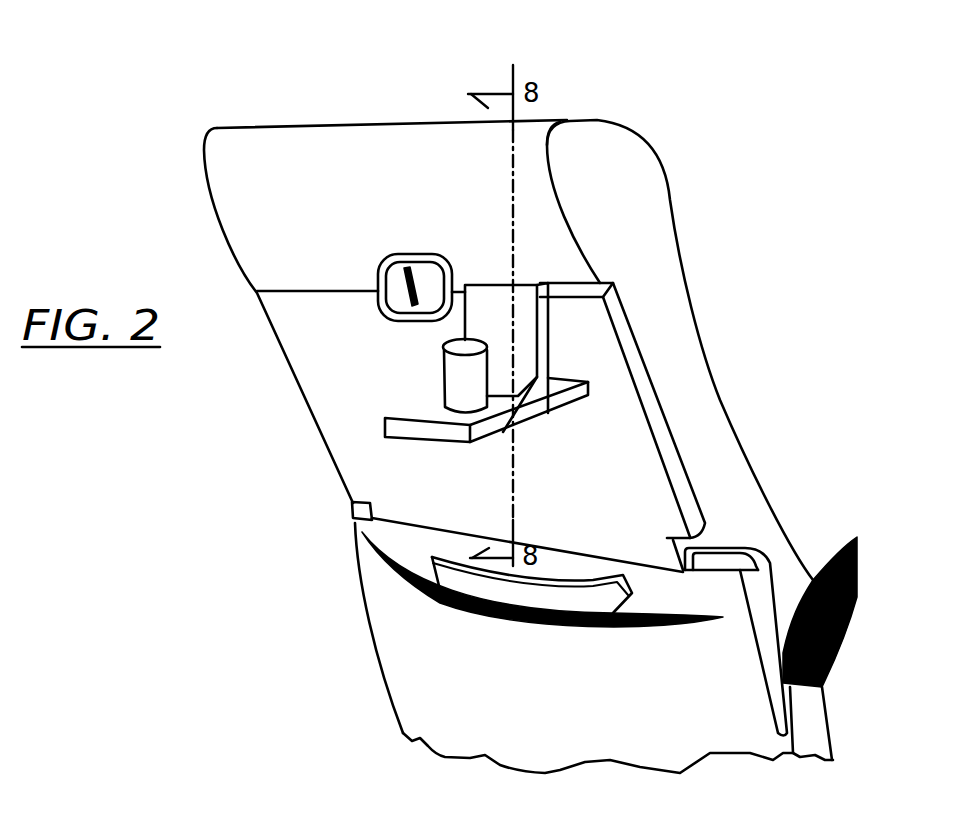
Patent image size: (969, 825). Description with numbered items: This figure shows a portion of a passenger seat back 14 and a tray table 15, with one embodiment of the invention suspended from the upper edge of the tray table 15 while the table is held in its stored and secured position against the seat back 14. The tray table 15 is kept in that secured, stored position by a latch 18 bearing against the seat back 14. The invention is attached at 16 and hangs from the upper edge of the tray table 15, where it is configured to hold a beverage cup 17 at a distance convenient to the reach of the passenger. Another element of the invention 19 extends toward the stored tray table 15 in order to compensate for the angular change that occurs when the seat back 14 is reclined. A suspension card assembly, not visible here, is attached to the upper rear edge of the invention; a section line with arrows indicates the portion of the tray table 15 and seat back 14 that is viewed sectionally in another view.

The seat back 14 is at (567, 165).
The tray table 15 is at (377, 475).
The attachment point 16 is at (540, 285).
The beverage cup 17 is at (460, 368).
The latch 18 is at (403, 287).
The compensating element 19 is at (588, 381).